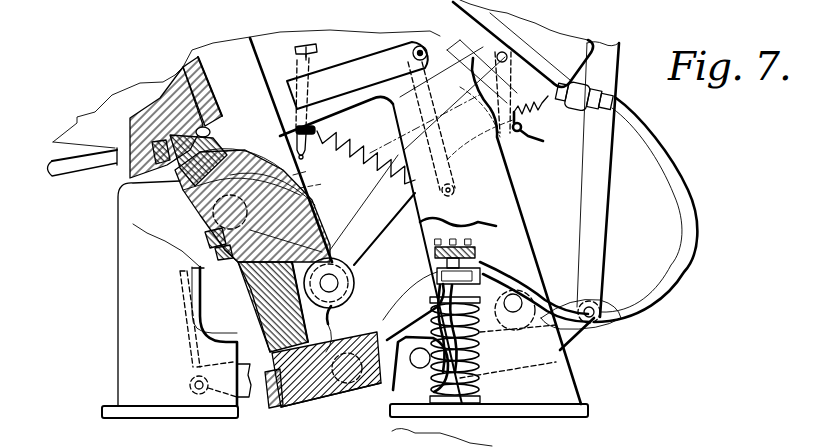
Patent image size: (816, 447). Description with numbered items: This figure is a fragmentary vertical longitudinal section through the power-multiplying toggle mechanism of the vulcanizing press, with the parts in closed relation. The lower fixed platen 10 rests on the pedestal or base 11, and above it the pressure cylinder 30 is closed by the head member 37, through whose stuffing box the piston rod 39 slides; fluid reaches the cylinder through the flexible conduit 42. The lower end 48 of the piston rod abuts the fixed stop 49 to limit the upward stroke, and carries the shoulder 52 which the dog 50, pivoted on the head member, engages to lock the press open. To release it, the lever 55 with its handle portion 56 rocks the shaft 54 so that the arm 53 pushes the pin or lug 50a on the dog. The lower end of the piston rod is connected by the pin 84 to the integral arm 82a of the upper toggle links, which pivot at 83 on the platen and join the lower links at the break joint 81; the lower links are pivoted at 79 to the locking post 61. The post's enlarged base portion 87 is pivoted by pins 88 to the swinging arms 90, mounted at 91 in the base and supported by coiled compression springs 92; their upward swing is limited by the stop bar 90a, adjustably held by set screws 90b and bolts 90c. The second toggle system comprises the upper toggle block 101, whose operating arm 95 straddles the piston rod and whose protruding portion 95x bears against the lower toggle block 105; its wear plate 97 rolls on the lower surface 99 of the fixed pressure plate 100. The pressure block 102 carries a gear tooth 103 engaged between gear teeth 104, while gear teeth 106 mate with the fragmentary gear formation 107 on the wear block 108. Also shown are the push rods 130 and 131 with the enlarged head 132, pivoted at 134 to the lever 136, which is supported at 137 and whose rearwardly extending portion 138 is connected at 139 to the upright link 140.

The lower fixed platen 10 is at (155, 107).
The pedestal or base 11 is at (130, 306).
The pressure cylinder 30 is at (584, 40).
The head member 37 is at (560, 98).
The piston rod 39 is at (417, 156).
The flexible conduit 42 is at (694, 190).
The lower end of the piston rod 48 is at (351, 275).
The fixed stop 49 is at (385, 138).
The dog 50 is at (510, 165).
The pin or lug 50a is at (528, 133).
The shoulder 52 is at (352, 299).
The arm 53 is at (458, 182).
The shaft 54 is at (422, 45).
The lever 55 is at (357, 75).
The handle portion 56 is at (58, 178).
The locking post 61 is at (204, 136).
The pivotal connection 79 is at (246, 318).
The break joint 81 is at (310, 171).
The integral arm 82a is at (324, 185).
The pivot 83 is at (216, 98).
The pin or rod 84 is at (338, 283).
The enlarged base portion 87 is at (311, 400).
The pins or shafts 88 is at (312, 399).
The swinging arm 90 is at (420, 322).
The stop bar 90a is at (476, 254).
The set screws 90b is at (470, 243).
The bolts 90c is at (455, 232).
The pivot 91 is at (516, 313).
The coiled compression spring 92 is at (486, 388).
The operating arm 95 is at (308, 204).
The protruding portion 95x is at (310, 225).
The wear plate 97 is at (188, 185).
The lower surface 99 is at (211, 132).
The fixed pressure plate 100 is at (177, 132).
The upper toggle block 101 is at (205, 210).
The pressure block 102 is at (210, 238).
The gear tooth 103 is at (222, 253).
The gear teeth 104 is at (238, 263).
The lower toggle block 105 is at (251, 290).
The gear teeth 106 is at (333, 318).
The fragmentary gear formation 107 is at (348, 386).
The wear block 108 is at (252, 393).
The push rod 130 is at (185, 345).
The push rod 131 is at (318, 52).
The enlarged head 132 is at (319, 42).
The pivotal attachment 134 is at (189, 384).
The lever 136 is at (218, 389).
The pivotal support 137 is at (415, 366).
The rearwardly extending portion 138 is at (582, 338).
The pivotal connection 139 is at (597, 300).
The upright link 140 is at (610, 160).